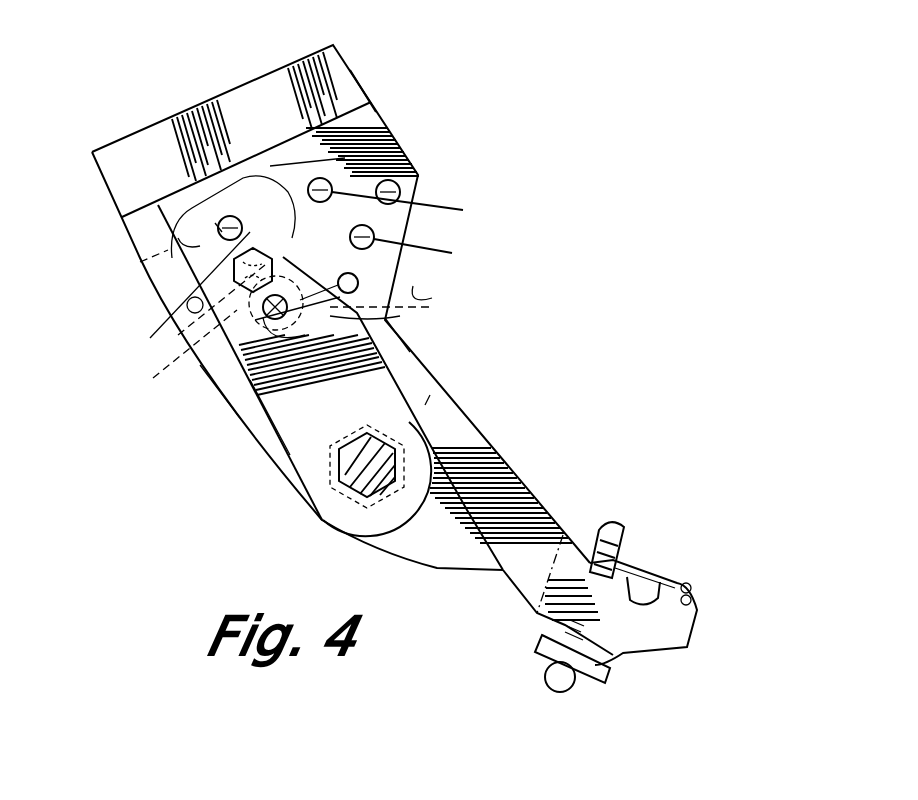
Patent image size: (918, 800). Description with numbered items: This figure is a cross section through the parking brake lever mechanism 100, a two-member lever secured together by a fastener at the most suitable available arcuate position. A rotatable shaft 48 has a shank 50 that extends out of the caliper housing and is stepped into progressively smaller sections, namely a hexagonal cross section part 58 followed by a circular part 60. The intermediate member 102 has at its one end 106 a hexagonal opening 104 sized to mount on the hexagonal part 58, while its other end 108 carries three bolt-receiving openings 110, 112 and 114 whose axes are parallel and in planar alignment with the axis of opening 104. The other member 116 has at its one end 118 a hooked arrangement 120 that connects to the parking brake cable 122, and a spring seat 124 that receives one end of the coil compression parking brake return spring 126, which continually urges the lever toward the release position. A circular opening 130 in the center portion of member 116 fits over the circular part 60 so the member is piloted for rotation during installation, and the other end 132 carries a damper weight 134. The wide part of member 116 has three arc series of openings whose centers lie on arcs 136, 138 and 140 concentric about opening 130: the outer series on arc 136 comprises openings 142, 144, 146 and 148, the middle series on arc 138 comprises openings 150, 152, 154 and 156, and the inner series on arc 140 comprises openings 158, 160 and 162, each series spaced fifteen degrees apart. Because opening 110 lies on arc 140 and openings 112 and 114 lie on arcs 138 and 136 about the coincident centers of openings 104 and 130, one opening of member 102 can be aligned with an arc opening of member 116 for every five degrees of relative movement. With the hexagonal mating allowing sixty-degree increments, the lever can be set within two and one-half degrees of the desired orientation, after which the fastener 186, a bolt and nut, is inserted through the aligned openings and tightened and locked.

The parking brake lever mechanism 100 is at (122, 136).
The damper weight 134 is at (190, 107).
The other end of member 116 132 is at (363, 93).
The other end of member 102 108 is at (173, 225).
The opening 144 is at (237, 218).
The bolt-receiving opening 114 is at (217, 226).
The opening 142 is at (140, 262).
The fastener 186 is at (232, 266).
The opening 150 is at (188, 310).
The bolt-receiving opening 112 is at (153, 378).
The member 116 is at (213, 410).
The intermediate member 102 is at (262, 431).
The hexagonal opening 104 is at (340, 468).
The one end of member 102 106 is at (322, 519).
The circular opening 130 is at (355, 440).
The hexagonal cross section part 58 is at (375, 470).
The circular part 60 is at (440, 400).
The rotatable shaft 48 is at (363, 500).
The shank 50 is at (387, 498).
The opening 146 is at (283, 257).
The opening 152 is at (307, 154).
The opening 148 is at (396, 186).
The arc 136 is at (443, 203).
The opening 154 is at (360, 228).
The opening 156 is at (375, 236).
The arc 138 is at (447, 249).
The opening 162 is at (358, 279).
The arc 140 is at (413, 287).
The opening 160 is at (430, 307).
The bolt-receiving opening 110 is at (383, 307).
The opening 158 is at (290, 322).
The parking brake cable 122 is at (606, 520).
The one end of member 116 118 is at (667, 645).
The parking brake return spring 126 is at (684, 580).
The spring seat 124 is at (692, 598).
The hooked arrangement 120 is at (613, 673).